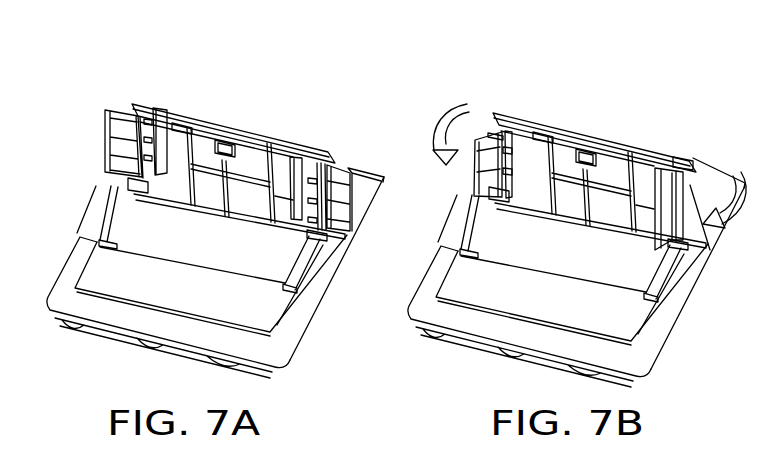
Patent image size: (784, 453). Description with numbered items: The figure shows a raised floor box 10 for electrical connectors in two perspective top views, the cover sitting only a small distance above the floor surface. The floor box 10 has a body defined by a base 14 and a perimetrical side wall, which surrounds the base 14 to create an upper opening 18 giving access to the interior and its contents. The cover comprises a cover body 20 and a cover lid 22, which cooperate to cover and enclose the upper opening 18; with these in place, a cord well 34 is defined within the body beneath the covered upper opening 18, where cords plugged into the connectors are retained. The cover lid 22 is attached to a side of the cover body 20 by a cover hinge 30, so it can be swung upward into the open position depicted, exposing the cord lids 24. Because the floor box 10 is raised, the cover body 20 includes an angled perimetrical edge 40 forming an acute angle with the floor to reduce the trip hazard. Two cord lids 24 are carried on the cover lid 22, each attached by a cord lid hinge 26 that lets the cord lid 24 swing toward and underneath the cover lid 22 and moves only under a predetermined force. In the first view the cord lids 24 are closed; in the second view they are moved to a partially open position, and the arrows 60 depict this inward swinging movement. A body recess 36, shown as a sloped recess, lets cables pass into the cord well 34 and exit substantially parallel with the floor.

In FIG. 7A, the floor box 10 is at (287, 118).
In FIG. 7B, the floor box 10 is at (610, 108).
In FIG. 7A, the base 14 is at (224, 252).
In FIG. 7B, the base 14 is at (598, 262).
In FIG. 7A, the upper opening 18 is at (161, 228).
In FIG. 7A, the cover body 20 is at (113, 275).
In FIG. 7B, the cover body 20 is at (492, 287).
In FIG. 7A, the cover lid 22 is at (180, 118).
In FIG. 7A, the cord lid 24 is at (103, 142).
In FIG. 7B, the cord lid 24 is at (484, 133).
In FIG. 7B, the cord lid hinge 26 is at (510, 130).
In FIG. 7A, the cover hinge 30 is at (355, 235).
In FIG. 7B, the cover hinge 30 is at (532, 200).
In FIG. 7B, the cord well 34 is at (522, 248).
In FIG. 7B, the body recess 36 is at (487, 222).
In FIG. 7A, the angled perimetrical edge 40 is at (293, 327).
In FIG. 7B, the arrows 60 is at (466, 103).